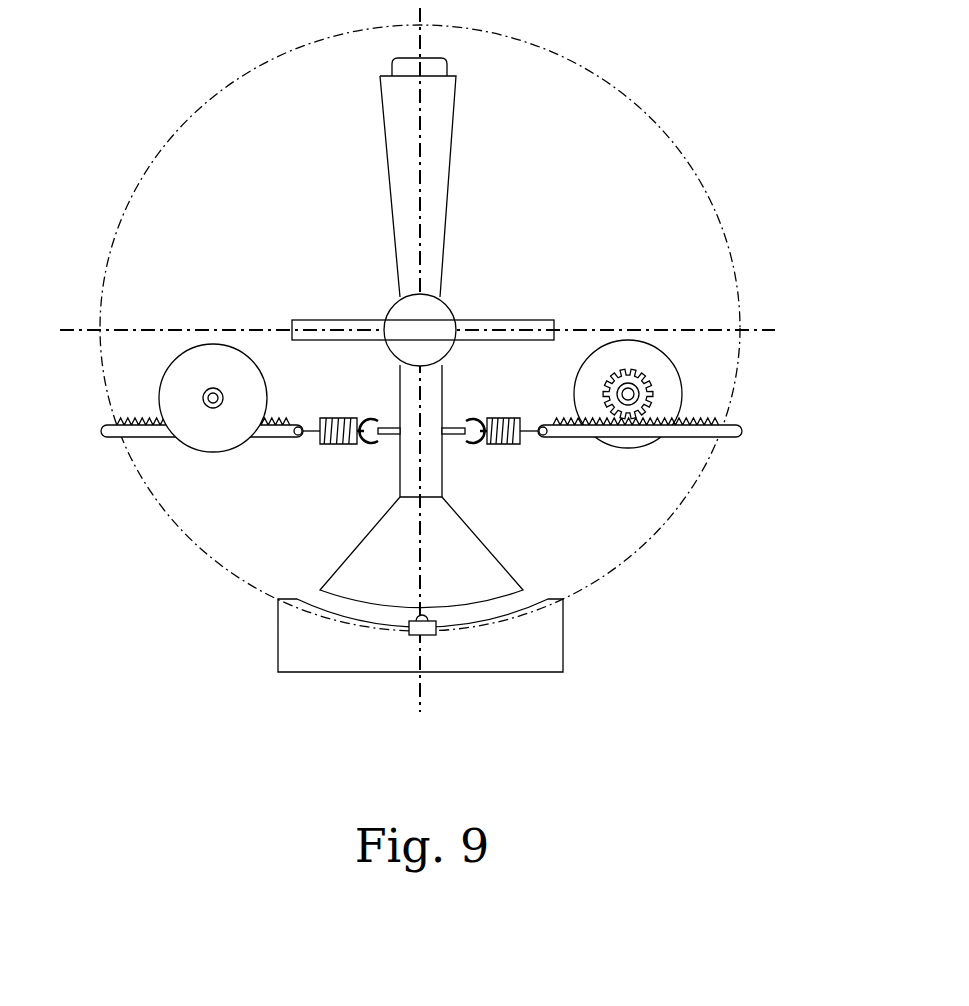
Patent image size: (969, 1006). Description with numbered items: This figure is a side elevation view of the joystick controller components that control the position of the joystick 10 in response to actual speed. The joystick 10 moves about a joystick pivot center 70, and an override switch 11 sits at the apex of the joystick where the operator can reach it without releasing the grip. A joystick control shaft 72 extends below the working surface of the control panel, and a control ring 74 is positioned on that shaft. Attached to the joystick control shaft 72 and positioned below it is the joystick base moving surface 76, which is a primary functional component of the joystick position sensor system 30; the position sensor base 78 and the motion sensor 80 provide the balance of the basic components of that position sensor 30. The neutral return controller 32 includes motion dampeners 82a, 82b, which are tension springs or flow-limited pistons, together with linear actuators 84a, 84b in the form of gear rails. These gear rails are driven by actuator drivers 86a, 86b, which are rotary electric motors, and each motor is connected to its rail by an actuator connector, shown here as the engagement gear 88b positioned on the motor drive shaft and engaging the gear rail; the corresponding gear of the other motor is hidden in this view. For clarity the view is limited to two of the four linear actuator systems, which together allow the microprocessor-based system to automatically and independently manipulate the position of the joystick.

The joystick 10 is at (340, 283).
The override switch 11 is at (457, 60).
The joystick position sensor system 30 is at (606, 588).
The neutral return controller 32 is at (296, 471).
The joystick pivot center 70 is at (457, 302).
The joystick control shaft 72 is at (427, 408).
The control ring 74 is at (455, 463).
The joystick base moving surface 76 is at (395, 585).
The position sensor base 78 is at (300, 647).
The motion sensor 80 is at (437, 630).
The motion dampener 82a is at (348, 420).
The motion dampener 82b is at (503, 414).
The linear actuator 84a is at (138, 425).
The linear actuator 84b is at (683, 422).
The actuator driver 86a is at (188, 382).
The actuator driver 86b is at (660, 367).
The actuator connector 88b is at (607, 377).